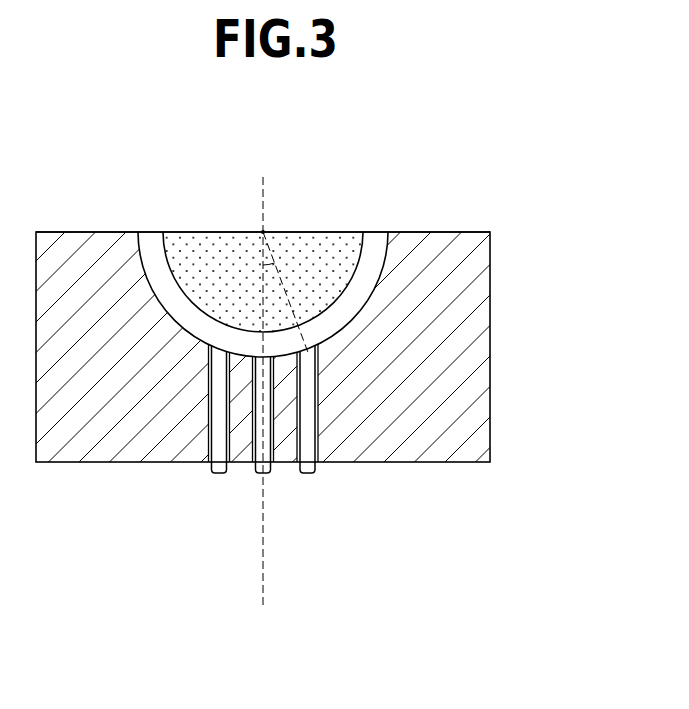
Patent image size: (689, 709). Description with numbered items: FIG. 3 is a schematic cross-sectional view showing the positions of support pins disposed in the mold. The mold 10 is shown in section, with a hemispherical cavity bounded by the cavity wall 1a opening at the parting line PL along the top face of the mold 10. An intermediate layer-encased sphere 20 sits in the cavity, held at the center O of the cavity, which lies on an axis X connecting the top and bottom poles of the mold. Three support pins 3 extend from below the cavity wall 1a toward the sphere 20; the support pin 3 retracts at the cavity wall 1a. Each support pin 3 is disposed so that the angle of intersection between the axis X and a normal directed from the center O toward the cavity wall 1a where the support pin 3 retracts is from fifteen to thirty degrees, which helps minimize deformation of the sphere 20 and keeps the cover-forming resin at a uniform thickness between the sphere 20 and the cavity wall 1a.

The mold / die block 10 is at (514, 256).
The intermediate layer-encased sphere 20 is at (202, 250).
The cavity wall 1a is at (148, 266).
The parting line PL is at (422, 232).
The support pin 3 is at (218, 473).
The axis X is at (262, 376).
The center O is at (263, 232).